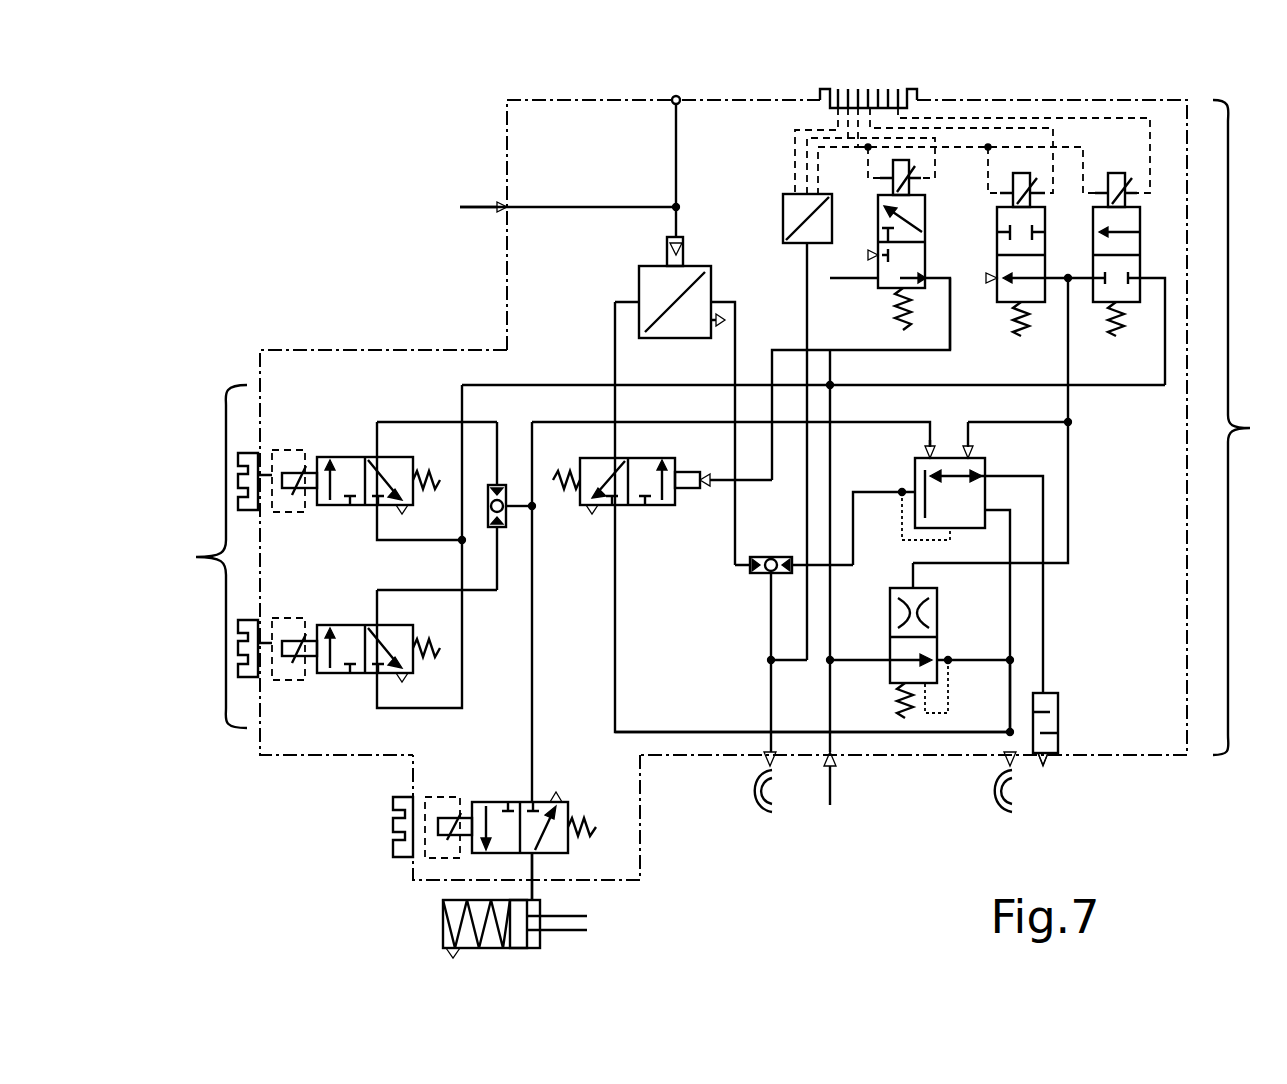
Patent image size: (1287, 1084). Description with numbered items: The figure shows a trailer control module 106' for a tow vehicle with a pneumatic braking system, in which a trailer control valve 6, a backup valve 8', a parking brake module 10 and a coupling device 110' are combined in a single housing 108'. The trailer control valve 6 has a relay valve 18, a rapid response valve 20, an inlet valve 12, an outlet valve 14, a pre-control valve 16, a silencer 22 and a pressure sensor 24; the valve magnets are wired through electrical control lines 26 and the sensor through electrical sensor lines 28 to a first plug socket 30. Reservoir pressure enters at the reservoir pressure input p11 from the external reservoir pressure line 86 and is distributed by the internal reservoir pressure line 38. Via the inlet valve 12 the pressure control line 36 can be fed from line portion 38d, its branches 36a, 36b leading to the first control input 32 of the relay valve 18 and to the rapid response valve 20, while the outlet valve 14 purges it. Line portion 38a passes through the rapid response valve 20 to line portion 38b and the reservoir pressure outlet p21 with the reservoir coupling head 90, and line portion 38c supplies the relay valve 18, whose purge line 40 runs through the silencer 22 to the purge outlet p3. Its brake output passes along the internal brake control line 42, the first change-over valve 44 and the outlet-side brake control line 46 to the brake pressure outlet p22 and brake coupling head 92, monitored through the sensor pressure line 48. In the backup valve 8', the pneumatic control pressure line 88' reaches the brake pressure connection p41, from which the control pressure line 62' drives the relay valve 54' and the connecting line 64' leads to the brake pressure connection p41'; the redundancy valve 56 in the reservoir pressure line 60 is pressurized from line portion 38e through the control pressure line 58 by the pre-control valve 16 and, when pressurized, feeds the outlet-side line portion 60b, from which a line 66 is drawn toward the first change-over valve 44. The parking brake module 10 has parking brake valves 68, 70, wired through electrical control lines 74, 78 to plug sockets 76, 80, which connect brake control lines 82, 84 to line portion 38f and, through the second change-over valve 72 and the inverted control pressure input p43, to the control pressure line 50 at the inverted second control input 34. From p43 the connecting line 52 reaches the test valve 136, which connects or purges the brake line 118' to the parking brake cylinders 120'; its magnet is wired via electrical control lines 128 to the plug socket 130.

The trailer control valve 6 is at (1245, 427).
The backup valve 8' is at (436, 284).
The parking brake module 10 is at (202, 556).
The inlet valve 12 is at (1140, 238).
The outlet valve 14 is at (997, 250).
The pre-control valve 16 is at (925, 218).
The relay valve 18 is at (915, 465).
The rapid response valve 20 is at (890, 630).
The silencer 22 is at (1058, 725).
The pressure sensor 24 is at (783, 222).
The electrical control lines 26 is at (1118, 110).
The electrical sensor lines 28 is at (785, 157).
The first plug socket 30 is at (917, 92).
The first control input 32 is at (975, 450).
The second control pressure input 34 is at (935, 447).
The pressure control line 36 is at (1070, 347).
The line branch 36a is at (1020, 422).
The line branch 36b is at (1068, 490).
The internal reservoir pressure line 38 is at (833, 685).
The line portion 38a is at (977, 660).
The outlet-side line portion 38b is at (1012, 685).
The line portion 38c is at (1010, 592).
The line portion 38d is at (905, 385).
The line portion 38e is at (830, 338).
The line portion 38f is at (581, 383).
The purge line 40 is at (1043, 627).
The internal brake control line 42 is at (853, 515).
The first change-over valve 44 is at (771, 557).
The outlet-side brake control line 46 is at (765, 610).
The sensor pressure line 48 is at (807, 278).
The control pressure line 50 is at (580, 422).
The connecting line 52 is at (534, 665).
The relay valve 54' is at (645, 287).
The redundancy valve 56 is at (650, 505).
The control pressure line 58 is at (950, 345).
The reservoir pressure line 60 is at (617, 645).
The outlet-side line portion 60b is at (617, 355).
The internal pneumatic control pressure line 62' is at (591, 171).
The connecting line 64' is at (638, 168).
The pneumatic line 66 is at (737, 325).
The parking brake valve 68 is at (355, 457).
The parking brake valve 70 is at (355, 625).
The second change-over valve 72 is at (506, 512).
The electrical control line 74 is at (283, 442).
The second plug socket 76 is at (256, 447).
The electrical control line 78 is at (283, 609).
The third plug socket 80 is at (256, 614).
The brake control line 82 is at (419, 422).
The brake control line 84 is at (480, 592).
The external reservoir pressure line 86 is at (832, 790).
The pneumatic control pressure line 88' is at (482, 245).
The reservoir coupling head 90 is at (1002, 812).
The brake coupling head 92 is at (762, 812).
The trailer control module 106' is at (539, 225).
The housing 108' is at (383, 515).
The coupling device 110' is at (443, 836).
The brake line 118' is at (581, 878).
The parking brake cylinders 120' is at (471, 929).
The electrical control lines 128 is at (440, 790).
The plug socket 130 is at (393, 825).
The test valve 136 is at (498, 802).
The brake pressure connection p41' is at (676, 85).
The pneumatic brake pressure connection p41 is at (483, 195).
The inverted control pressure input p43 is at (541, 514).
The brake pressure outlet p22 is at (747, 767).
The reservoir pressure input p11 is at (854, 767).
The reservoir pressure outlet p21 is at (989, 767).
The purge outlet p3 is at (1057, 768).